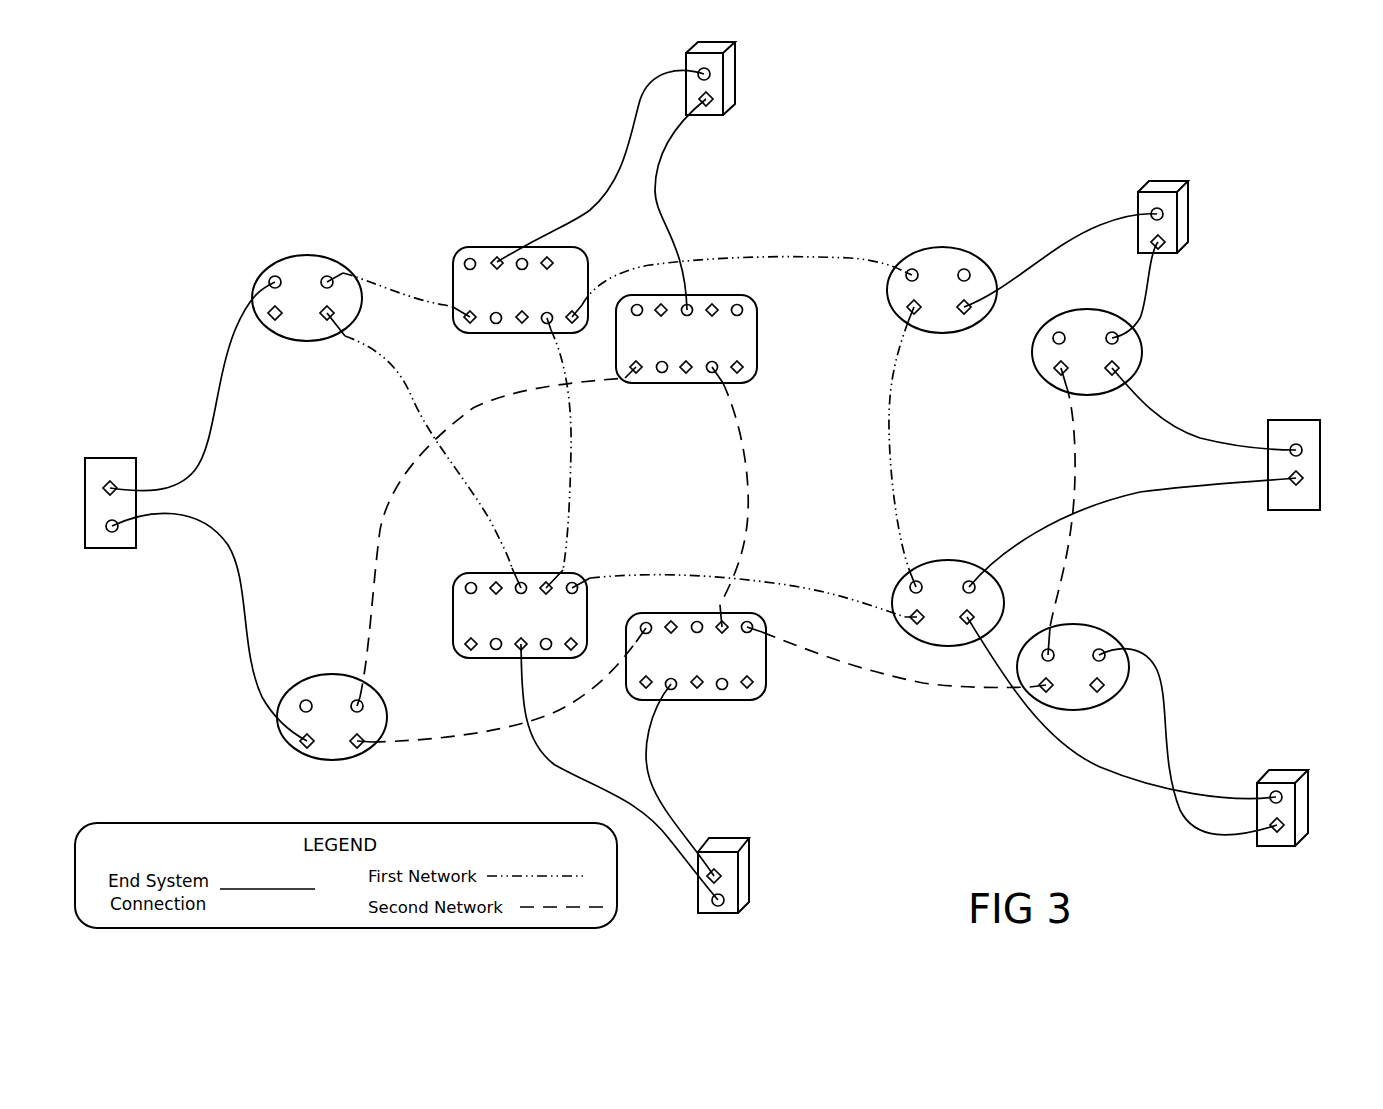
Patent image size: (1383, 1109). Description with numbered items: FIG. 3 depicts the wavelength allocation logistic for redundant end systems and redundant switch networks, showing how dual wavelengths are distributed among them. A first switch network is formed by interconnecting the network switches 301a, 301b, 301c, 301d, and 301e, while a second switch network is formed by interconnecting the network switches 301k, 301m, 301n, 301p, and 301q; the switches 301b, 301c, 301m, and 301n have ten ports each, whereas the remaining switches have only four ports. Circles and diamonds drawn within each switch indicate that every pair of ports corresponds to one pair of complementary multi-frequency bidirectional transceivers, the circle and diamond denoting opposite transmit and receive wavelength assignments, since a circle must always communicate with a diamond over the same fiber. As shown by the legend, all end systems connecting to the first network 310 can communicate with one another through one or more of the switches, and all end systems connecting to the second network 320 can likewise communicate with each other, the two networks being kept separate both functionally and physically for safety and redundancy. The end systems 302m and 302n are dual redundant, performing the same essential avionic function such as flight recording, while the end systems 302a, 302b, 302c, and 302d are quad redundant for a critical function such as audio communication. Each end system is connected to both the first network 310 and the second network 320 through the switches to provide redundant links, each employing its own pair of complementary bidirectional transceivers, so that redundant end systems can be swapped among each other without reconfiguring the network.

The network switch 301a is at (299, 285).
The network switch 301b is at (520, 307).
The network switch 301c is at (518, 634).
The network switch 301d is at (942, 306).
The network switch 301e is at (932, 608).
The network switch 301k is at (332, 735).
The network switch 301m is at (686, 357).
The network switch 301n is at (704, 672).
The network switch 301p is at (1119, 352).
The network switch 301q is at (1088, 678).
The end system 302a is at (738, 94).
The end system 302b is at (1191, 217).
The end system 302c is at (749, 887).
The end system 302d is at (1312, 818).
The end system 302m is at (130, 522).
The end system 302n is at (1324, 488).
The first network 310 is at (806, 258).
The second network 320 is at (897, 678).